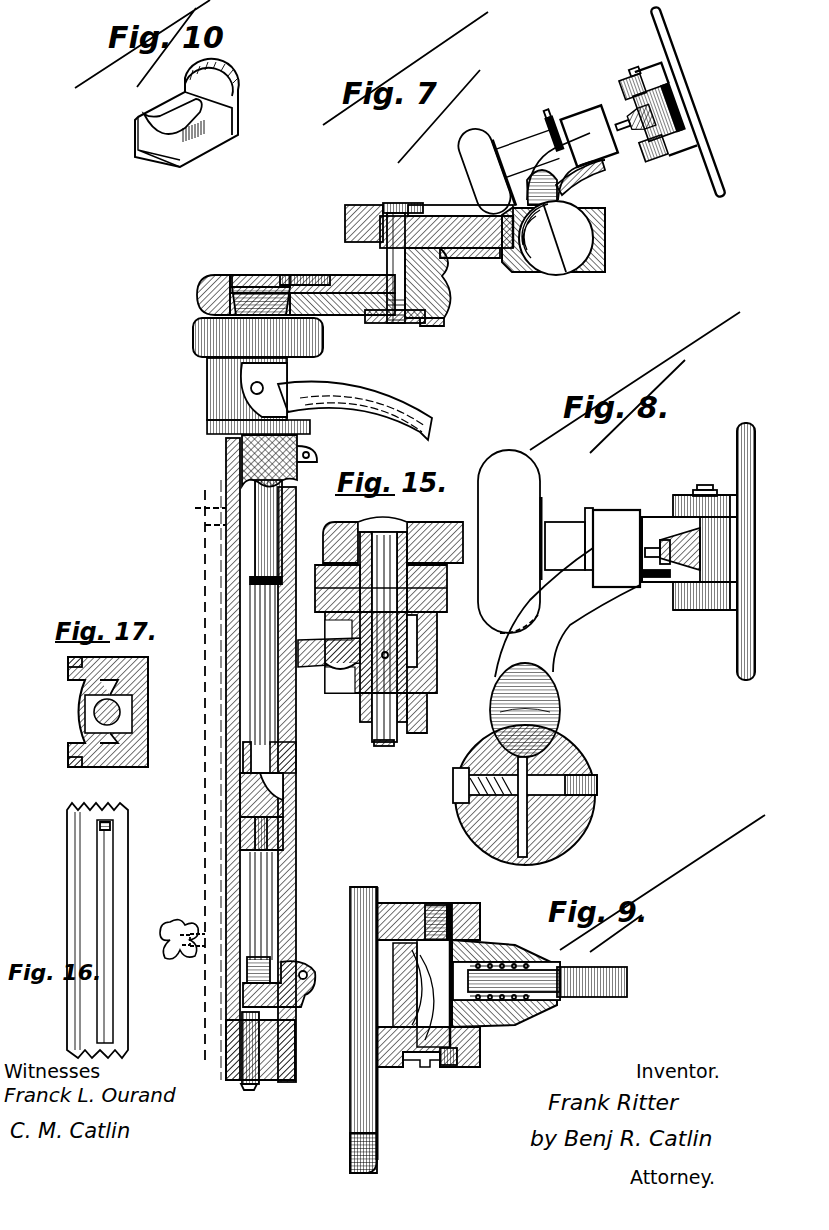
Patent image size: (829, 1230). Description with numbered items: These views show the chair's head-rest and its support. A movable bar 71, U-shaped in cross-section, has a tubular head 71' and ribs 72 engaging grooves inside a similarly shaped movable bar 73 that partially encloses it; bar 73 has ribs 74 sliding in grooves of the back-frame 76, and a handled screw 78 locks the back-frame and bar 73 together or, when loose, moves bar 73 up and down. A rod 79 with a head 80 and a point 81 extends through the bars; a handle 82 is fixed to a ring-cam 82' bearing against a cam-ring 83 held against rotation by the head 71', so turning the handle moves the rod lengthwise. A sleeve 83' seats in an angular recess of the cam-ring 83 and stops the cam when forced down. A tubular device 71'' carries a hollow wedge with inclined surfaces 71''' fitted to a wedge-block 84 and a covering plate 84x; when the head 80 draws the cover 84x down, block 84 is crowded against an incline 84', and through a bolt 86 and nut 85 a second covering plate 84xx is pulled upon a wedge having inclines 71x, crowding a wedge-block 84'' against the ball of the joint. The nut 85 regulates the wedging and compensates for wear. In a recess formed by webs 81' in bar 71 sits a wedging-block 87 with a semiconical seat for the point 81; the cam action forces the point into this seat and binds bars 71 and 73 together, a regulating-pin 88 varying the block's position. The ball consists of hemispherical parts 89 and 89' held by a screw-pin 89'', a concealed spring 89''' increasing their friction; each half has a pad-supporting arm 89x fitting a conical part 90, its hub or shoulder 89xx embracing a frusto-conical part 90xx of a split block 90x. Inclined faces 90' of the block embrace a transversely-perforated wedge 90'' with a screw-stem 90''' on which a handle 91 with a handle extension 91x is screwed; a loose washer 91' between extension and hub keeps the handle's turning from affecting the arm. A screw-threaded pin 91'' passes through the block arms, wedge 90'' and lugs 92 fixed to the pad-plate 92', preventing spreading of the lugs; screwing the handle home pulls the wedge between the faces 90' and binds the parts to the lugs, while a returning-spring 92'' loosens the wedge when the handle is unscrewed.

In FIG. 7, the movable bar 71 is at (270, 760).
In FIG. 15, the movable bar 71 is at (432, 713).
In FIG. 17, the movable bar 71 is at (95, 712).
In FIG. 16, the movable bar 71 is at (81, 930).
In FIG. 7, the tubular head 71' is at (354, 430).
In FIG. 7, the tubular device 71'' is at (237, 398).
In FIG. 15, the tubular device 71'' is at (373, 588).
In FIG. 7, the inclined surfaces 71''' is at (251, 318).
In FIG. 7, the wedge inclines 71x is at (348, 207).
In FIG. 15, the wedge inclines 71x is at (430, 677).
In FIG. 17, the ribs 72 is at (122, 675).
In FIG. 16, the ribs 72 is at (107, 880).
In FIG. 7, the movable bar 73 is at (226, 672).
In FIG. 17, the movable bar 73 is at (98, 770).
In FIG. 17, the ribs 74 is at (61, 719).
In FIG. 7, the back-frame 76 is at (204, 978).
In FIG. 7, the handled screw 78 is at (160, 935).
In FIG. 7, the rod 79 is at (262, 545).
In FIG. 15, the rod 79 is at (398, 745).
In FIG. 17, the rod 79 is at (122, 712).
In FIG. 7, the head 80 is at (258, 275).
In FIG. 15, the head 80 is at (386, 522).
In FIG. 15, the point 81 is at (365, 707).
In FIG. 7, the webs 81' is at (300, 793).
In FIG. 7, the handle 82 is at (355, 413).
In FIG. 15, the handle 82 is at (329, 645).
In FIG. 7, the ring-cam 82' is at (224, 392).
In FIG. 15, the ring-cam 82' is at (394, 676).
In FIG. 7, the cam-ring 83 is at (207, 377).
In FIG. 15, the cam-ring 83 is at (398, 652).
In FIG. 15, the sleeve 83' is at (463, 579).
In FIG. 7, the wedge-block 84 is at (423, 286).
In FIG. 7, the incline 84' is at (446, 283).
In FIG. 7, the wedge-block 84'' is at (470, 263).
In FIG. 7, the covering plate 84x is at (312, 283).
In FIG. 15, the covering plate 84x is at (450, 510).
In FIG. 7, the covering plate 84xx is at (400, 203).
In FIG. 7, the nut 85 is at (430, 328).
In FIG. 7, the bolt 86 is at (394, 326).
In FIG. 10, the wedging-block 87 is at (220, 127).
In FIG. 7, the wedging-block 87 is at (250, 800).
In FIG. 7, the regulating-pin 88 is at (252, 935).
In FIG. 7, the hemispherical part 89 is at (553, 240).
In FIG. 8, the hemispherical part 89 is at (520, 795).
In FIG. 8, the hemispherical part 89' is at (548, 761).
In FIG. 8, the screw-pin 89'' is at (547, 807).
In FIG. 8, the concealed spring 89''' is at (435, 815).
In FIG. 7, the pad-supporting arm 89x is at (566, 166).
In FIG. 8, the pad-supporting arm 89x is at (567, 612).
In FIG. 7, the hub or shoulder 89xx is at (591, 146).
In FIG. 8, the hub or shoulder 89xx is at (617, 548).
In FIG. 8, the conical part 90 is at (689, 549).
In FIG. 9, the conical part 90 is at (511, 979).
In FIG. 8, the inclined faces 90' is at (650, 607).
In FIG. 9, the inclined faces 90' is at (426, 1027).
In FIG. 7, the wedge 90'' is at (686, 93).
In FIG. 8, the wedge 90'' is at (724, 554).
In FIG. 9, the wedge 90'' is at (443, 991).
In FIG. 9, the screw-stem 90''' is at (612, 982).
In FIG. 7, the split block 90x is at (600, 86).
In FIG. 8, the split block 90x is at (672, 530).
In FIG. 9, the split block 90x is at (495, 962).
In FIG. 9, the frusto-conical part 90xx is at (552, 1007).
In FIG. 7, the handle 91 is at (455, 173).
In FIG. 8, the handle 91 is at (509, 541).
In FIG. 7, the loose washer 91' is at (542, 86).
In FIG. 8, the loose washer 91' is at (583, 525).
In FIG. 7, the screw-threaded pin 91'' is at (648, 43).
In FIG. 8, the screw-threaded pin 91'' is at (741, 487).
In FIG. 9, the screw-threaded pin 91'' is at (468, 1065).
In FIG. 7, the handle extension 91x is at (528, 157).
In FIG. 8, the handle extension 91x is at (565, 546).
In FIG. 7, the lugs 92 is at (644, 101).
In FIG. 8, the lugs 92 is at (705, 554).
In FIG. 9, the lugs 92 is at (432, 995).
In FIG. 7, the pad-plate 92' is at (698, 99).
In FIG. 8, the pad-plate 92' is at (721, 554).
In FIG. 9, the pad-plate 92' is at (348, 1030).
In FIG. 9, the returning-spring 92'' is at (505, 936).